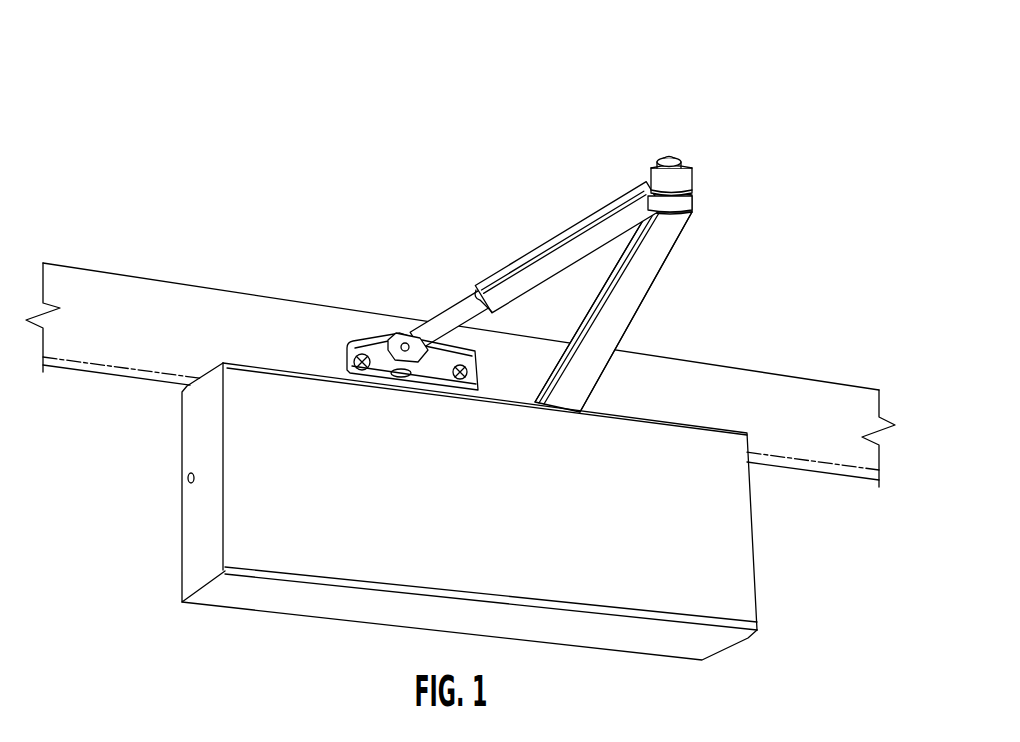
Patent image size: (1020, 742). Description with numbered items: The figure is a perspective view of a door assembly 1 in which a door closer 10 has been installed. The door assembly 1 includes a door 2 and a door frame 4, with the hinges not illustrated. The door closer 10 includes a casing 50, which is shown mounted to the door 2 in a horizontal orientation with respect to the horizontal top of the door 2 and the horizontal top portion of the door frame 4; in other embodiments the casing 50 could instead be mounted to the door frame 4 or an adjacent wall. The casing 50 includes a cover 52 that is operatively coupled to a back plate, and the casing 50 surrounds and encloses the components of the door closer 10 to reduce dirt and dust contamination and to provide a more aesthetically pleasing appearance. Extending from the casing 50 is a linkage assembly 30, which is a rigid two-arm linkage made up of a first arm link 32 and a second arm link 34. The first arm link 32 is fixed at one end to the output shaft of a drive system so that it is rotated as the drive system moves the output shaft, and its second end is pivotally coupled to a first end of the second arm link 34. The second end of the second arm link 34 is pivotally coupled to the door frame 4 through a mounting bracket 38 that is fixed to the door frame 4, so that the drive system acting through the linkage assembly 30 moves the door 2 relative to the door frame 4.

The door assembly 1 is at (462, 93).
The door 2 is at (83, 397).
The door frame 4 is at (730, 382).
The door closer 10 is at (509, 371).
The linkage assembly 30 is at (606, 247).
The first arm link 32 is at (673, 232).
The second arm link 34 is at (517, 267).
The mounting bracket 38 is at (375, 330).
The casing 50 is at (509, 428).
The cover 52 is at (247, 400).